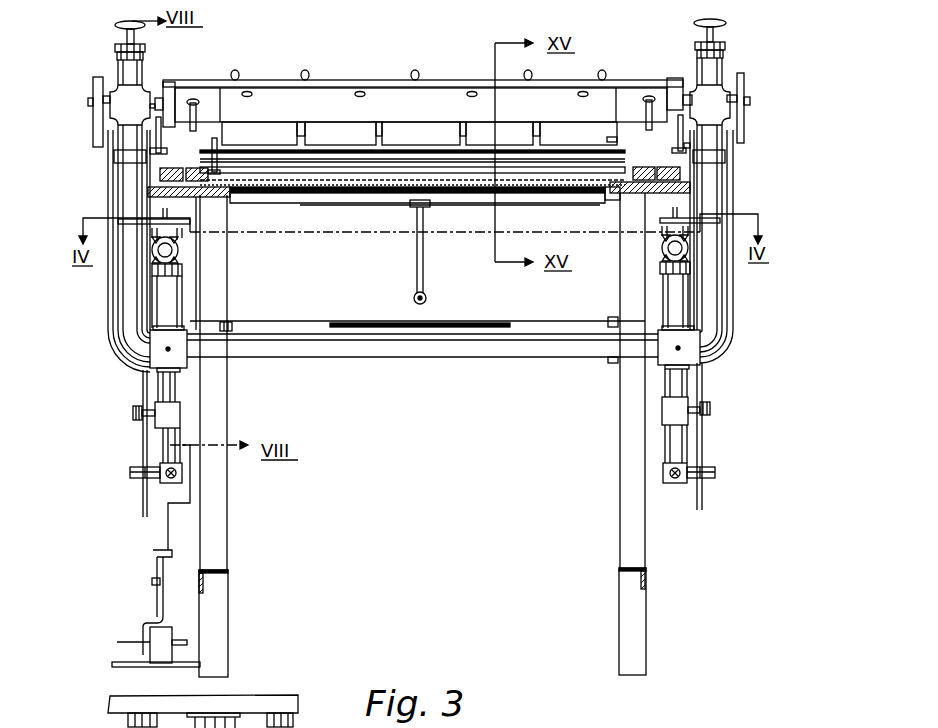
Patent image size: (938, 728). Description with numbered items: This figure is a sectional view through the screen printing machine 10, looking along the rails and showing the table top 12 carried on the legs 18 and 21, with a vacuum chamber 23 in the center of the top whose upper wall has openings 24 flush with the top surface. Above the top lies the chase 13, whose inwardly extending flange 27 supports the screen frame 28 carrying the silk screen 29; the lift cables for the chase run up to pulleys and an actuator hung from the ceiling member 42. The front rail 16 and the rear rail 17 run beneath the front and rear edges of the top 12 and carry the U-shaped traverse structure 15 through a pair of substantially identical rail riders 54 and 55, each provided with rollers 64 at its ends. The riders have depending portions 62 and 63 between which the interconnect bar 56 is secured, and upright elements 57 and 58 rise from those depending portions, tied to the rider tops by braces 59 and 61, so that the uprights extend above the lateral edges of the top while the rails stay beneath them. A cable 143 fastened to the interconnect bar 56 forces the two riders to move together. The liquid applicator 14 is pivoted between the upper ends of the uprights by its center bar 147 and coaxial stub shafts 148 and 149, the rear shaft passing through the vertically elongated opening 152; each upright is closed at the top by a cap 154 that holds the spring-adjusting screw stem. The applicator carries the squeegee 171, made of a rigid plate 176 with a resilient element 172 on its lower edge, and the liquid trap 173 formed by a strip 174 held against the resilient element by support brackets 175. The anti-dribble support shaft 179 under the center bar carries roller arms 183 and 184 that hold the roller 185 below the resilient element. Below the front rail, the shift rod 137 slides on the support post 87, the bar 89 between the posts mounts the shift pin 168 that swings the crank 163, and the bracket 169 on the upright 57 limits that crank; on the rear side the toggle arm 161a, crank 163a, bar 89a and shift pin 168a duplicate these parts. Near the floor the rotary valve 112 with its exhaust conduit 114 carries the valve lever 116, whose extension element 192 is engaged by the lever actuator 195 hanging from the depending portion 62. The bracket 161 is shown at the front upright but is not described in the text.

The machine 10 is at (688, 581).
The top 12 is at (222, 198).
The chase 13 is at (660, 176).
The liquid applicator 14 is at (323, 78).
The traverse structure 15 is at (98, 309).
The front rail 16 is at (183, 263).
The rear rail 17 is at (660, 250).
The leg 18 is at (218, 547).
The leg 21 is at (625, 542).
The vacuum chamber 23 is at (365, 205).
The openings 24 is at (303, 203).
The flange 27 is at (645, 192).
The screen frame 28 is at (640, 168).
The silk screen 29 is at (440, 192).
The ceiling member 42 is at (270, 700).
The rail rider 54 is at (178, 284).
The rail rider 55 is at (688, 292).
The interconnect bar 56 is at (435, 358).
The upright element 57 is at (110, 274).
The upright element 58 is at (736, 277).
The brace 59 is at (122, 220).
The brace 61 is at (720, 218).
The depending portion 62 is at (162, 385).
The depending portion 63 is at (688, 376).
The rollers 64 is at (180, 245).
The support post 87 is at (162, 452).
The bar 89 is at (165, 478).
The bar 89a is at (675, 480).
The rotary valve 112 is at (160, 655).
The exhaust conduit 114 is at (187, 643).
The lever 116 is at (160, 615).
The shift rod 137 is at (190, 363).
The cable 143 is at (358, 322).
The center bar 147 is at (441, 99).
The stub shaft 148 is at (164, 88).
The stub shaft 149 is at (685, 90).
The opening 152 is at (726, 94).
The cap 154 is at (117, 52).
The bracket 161 is at (93, 94).
The toggle arm 161a is at (745, 90).
The crank 163 is at (112, 348).
The crank 163a is at (735, 346).
The shift pin 168 is at (130, 478).
The shift pin 168a is at (713, 478).
The bracket 169 is at (133, 411).
The squeegee 171 is at (398, 133).
The resilient element 172 is at (543, 150).
The liquid trap 173 is at (313, 150).
The strip 174 is at (400, 155).
The support brackets 175 is at (478, 119).
The rigid plate 176 is at (253, 130).
The support shaft 179 is at (503, 121).
The roller arm 183 is at (212, 156).
The roller arm 184 is at (628, 163).
The roller 185 is at (521, 165).
The extension element 192 is at (160, 548).
The lever actuator 195 is at (157, 556).